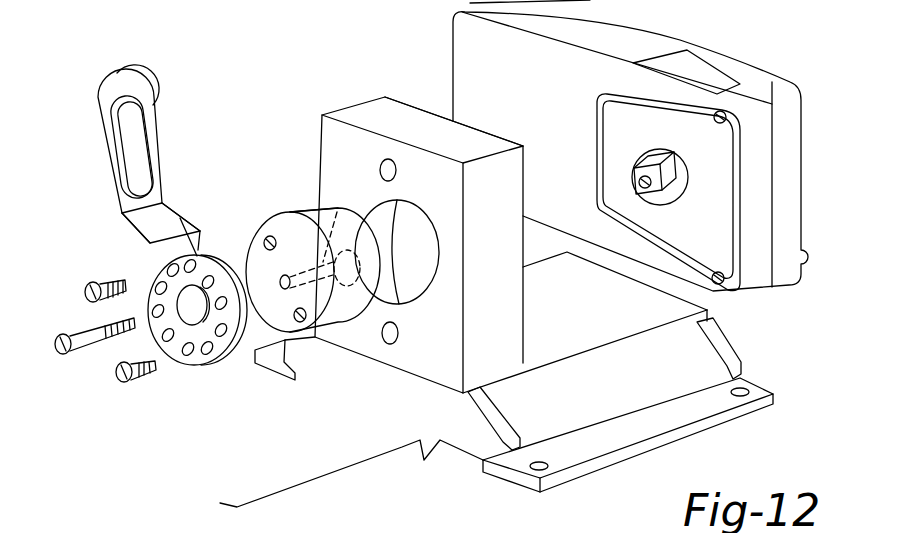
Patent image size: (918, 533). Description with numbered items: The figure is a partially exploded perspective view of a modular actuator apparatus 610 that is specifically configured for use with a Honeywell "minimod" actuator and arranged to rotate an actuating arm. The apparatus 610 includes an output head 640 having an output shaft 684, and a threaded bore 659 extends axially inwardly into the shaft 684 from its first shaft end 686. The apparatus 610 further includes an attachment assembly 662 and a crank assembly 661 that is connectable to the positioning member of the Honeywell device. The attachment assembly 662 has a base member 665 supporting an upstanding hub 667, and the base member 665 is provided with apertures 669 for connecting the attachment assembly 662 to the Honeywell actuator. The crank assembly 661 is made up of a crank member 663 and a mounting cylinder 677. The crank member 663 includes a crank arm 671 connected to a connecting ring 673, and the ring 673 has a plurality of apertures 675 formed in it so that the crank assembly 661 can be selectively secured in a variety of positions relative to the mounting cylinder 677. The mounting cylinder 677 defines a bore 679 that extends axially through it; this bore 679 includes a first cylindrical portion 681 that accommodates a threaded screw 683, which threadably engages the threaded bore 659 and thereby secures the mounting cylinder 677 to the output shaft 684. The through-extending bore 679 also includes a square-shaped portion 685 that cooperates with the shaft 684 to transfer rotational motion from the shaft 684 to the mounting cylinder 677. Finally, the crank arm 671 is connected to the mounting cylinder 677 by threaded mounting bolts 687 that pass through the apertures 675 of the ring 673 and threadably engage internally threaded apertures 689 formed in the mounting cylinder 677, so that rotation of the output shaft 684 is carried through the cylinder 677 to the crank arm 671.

The modular actuator apparatus 610 is at (356, 46).
The attachment assembly 662 is at (384, 84).
The square-shaped portion 685 is at (378, 207).
The output head 640 is at (790, 182).
The threaded bore 659 is at (660, 140).
The first shaft end 686 is at (708, 158).
The output shaft 684 is at (650, 196).
The upstanding hub 667 is at (500, 330).
The base member 665 is at (696, 417).
The apertures 669 is at (550, 478).
The first cylindrical portion 681 is at (355, 206).
The mounting cylinder 677 is at (309, 222).
The internally threaded apertures 689 is at (283, 240).
The bore 679 is at (314, 295).
The crank assembly 661 is at (239, 178).
The crank member 663 is at (137, 259).
The crank arm 671 is at (143, 125).
The connecting ring 673 is at (220, 233).
The apertures 675 is at (204, 352).
The threaded mounting bolts 687 is at (88, 300).
The threaded screw 683 is at (90, 346).